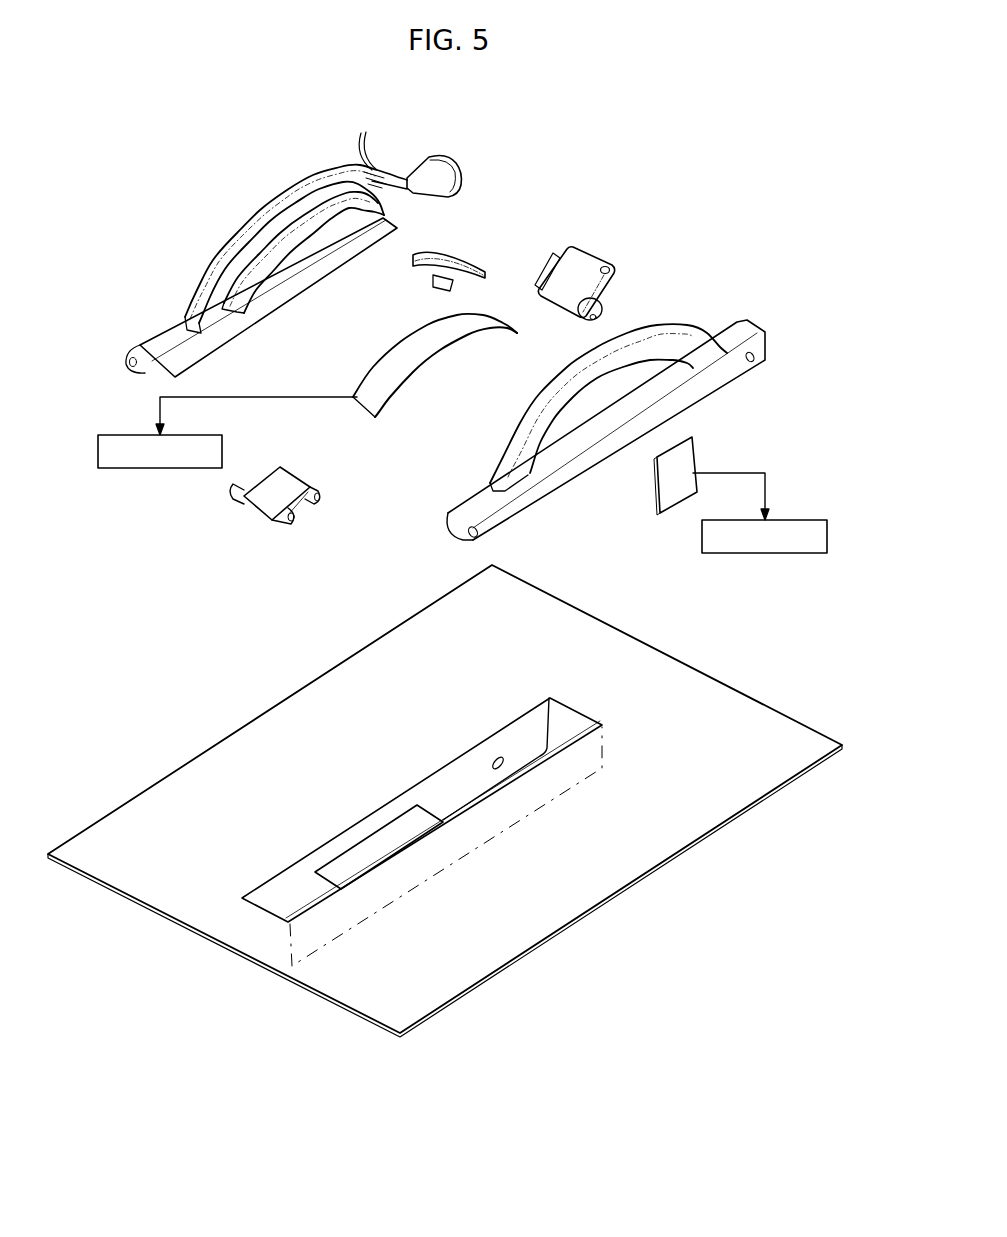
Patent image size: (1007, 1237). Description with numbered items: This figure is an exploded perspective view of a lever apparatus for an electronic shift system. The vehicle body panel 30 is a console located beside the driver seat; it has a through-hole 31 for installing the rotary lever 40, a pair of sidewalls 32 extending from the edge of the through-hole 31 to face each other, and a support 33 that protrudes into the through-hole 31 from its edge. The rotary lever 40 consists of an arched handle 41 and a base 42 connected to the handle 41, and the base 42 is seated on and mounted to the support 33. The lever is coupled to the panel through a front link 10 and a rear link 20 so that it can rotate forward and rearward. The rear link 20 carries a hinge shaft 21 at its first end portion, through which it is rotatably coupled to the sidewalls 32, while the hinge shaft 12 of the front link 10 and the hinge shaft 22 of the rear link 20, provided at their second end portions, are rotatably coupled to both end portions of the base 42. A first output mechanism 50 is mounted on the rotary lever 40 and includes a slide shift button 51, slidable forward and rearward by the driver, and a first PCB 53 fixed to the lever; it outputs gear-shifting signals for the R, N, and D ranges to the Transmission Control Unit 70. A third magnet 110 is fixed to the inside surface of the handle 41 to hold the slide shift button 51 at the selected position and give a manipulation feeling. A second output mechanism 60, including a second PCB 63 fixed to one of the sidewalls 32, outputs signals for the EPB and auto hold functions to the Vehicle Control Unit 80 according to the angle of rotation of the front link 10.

The front link 10 is at (616, 247).
The hinge shaft 12 is at (610, 267).
The rear link 20 is at (291, 528).
The hinge shaft 21 is at (287, 523).
The hinge shaft 22 is at (313, 498).
The vehicle body panel 30 is at (445, 801).
The through-hole 31 is at (563, 747).
The sidewalls 32 is at (470, 777).
The support 33 is at (355, 845).
The rotary lever 40 is at (437, 314).
The arched handle 41 is at (238, 235).
The base 42 is at (183, 362).
The first output mechanism 50 is at (477, 223).
The slide shift button 51 is at (467, 263).
The first PCB 53 is at (417, 340).
The second output mechanism 60 is at (727, 451).
The second PCB 63 is at (707, 443).
The Transmission Control Unit (TCU) 70 is at (113, 435).
The Vehicle Control Unit (VCU) 80 is at (802, 521).
The third magnet 110 is at (376, 146).